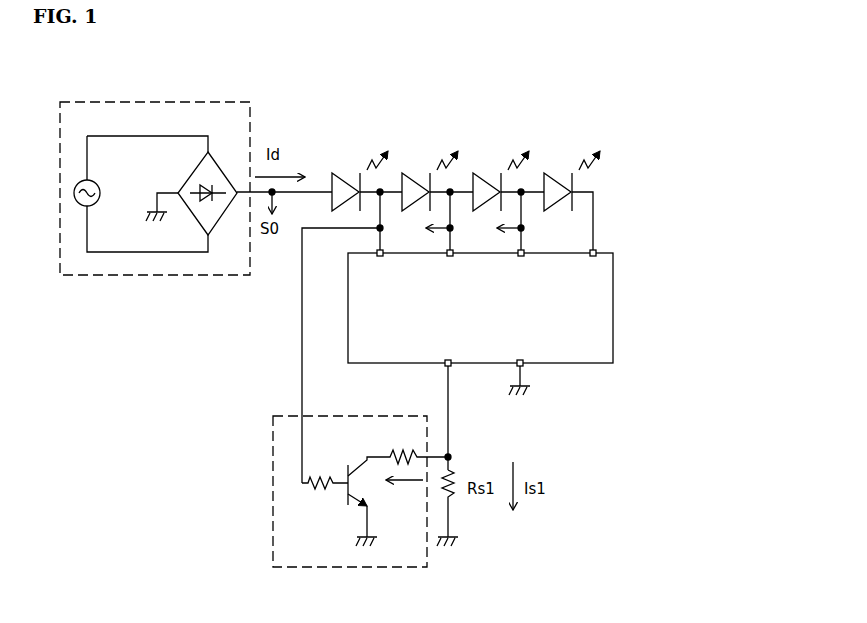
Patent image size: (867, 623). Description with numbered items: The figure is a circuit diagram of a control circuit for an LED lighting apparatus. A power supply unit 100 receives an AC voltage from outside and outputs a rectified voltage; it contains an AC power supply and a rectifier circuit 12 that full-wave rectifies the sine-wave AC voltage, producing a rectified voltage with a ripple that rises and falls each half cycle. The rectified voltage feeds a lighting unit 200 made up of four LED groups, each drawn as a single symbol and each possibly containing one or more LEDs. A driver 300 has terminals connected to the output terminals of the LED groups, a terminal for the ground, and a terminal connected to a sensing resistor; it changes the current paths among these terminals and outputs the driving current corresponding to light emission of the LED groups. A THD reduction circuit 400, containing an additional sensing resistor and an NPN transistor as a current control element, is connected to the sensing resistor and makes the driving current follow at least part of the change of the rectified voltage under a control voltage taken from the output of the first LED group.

The power supply unit 100 is at (155, 101).
The rectifier circuit 12 is at (213, 155).
The lighting unit 200 is at (590, 118).
The driver 300 is at (431, 364).
The THD reduction circuit 400 is at (273, 520).